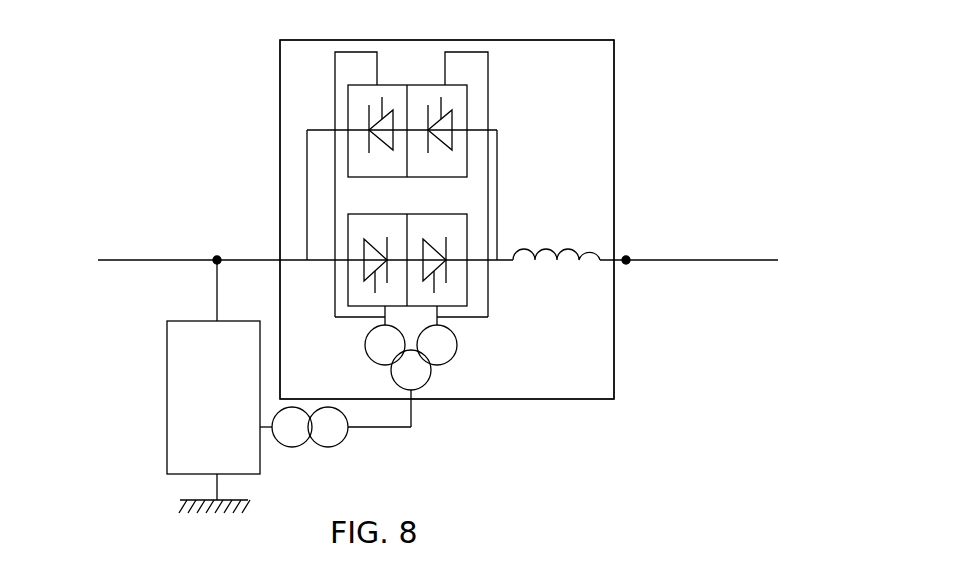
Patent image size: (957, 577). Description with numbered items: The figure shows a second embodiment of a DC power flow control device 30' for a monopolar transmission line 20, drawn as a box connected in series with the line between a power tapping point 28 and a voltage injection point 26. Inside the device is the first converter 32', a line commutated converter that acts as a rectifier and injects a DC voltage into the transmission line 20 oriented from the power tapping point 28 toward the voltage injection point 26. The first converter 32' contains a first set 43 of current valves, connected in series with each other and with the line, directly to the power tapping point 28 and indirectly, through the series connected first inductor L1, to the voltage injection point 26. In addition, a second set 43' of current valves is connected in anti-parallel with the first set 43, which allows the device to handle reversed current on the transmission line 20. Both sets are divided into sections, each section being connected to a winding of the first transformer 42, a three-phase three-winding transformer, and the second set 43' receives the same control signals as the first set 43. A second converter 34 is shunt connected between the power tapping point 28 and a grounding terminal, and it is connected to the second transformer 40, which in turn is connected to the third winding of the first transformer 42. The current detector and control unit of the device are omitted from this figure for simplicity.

The transmission line 20 is at (155, 258).
The power tapping point 28 is at (217, 260).
The voltage injection point 26 is at (626, 260).
The first inductor L1 is at (556, 237).
The DC power flow control device 30' is at (545, 207).
The first converter 32' is at (447, 263).
The second converter 34 is at (213, 417).
The second transformer 40 is at (335, 438).
The first transformer 42 is at (436, 348).
The second set of current valves 43' is at (402, 182).
The first set of current valves 43 is at (407, 245).